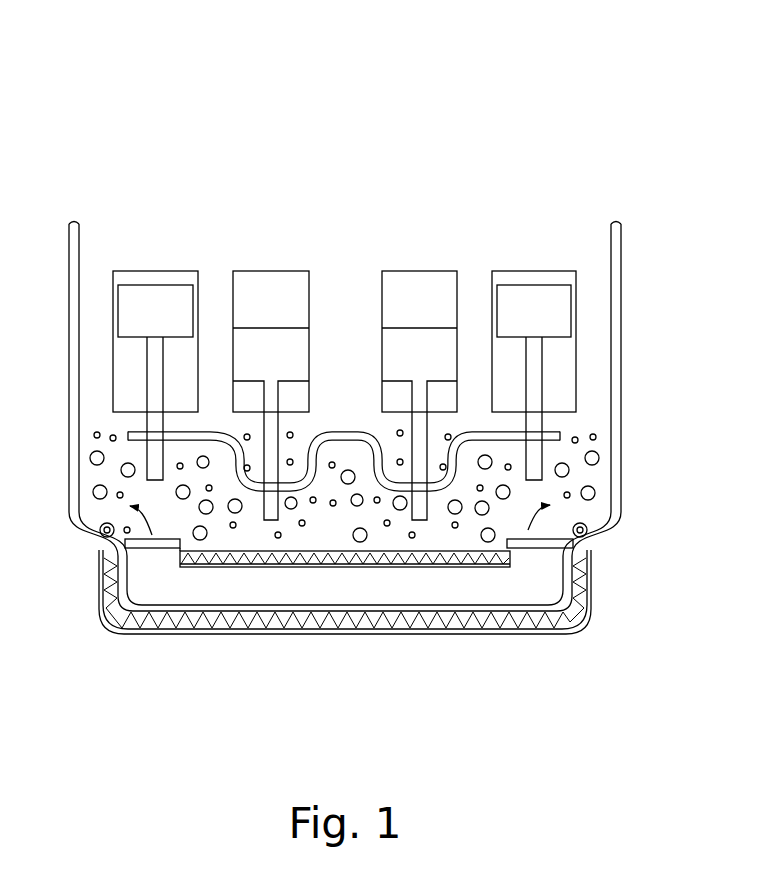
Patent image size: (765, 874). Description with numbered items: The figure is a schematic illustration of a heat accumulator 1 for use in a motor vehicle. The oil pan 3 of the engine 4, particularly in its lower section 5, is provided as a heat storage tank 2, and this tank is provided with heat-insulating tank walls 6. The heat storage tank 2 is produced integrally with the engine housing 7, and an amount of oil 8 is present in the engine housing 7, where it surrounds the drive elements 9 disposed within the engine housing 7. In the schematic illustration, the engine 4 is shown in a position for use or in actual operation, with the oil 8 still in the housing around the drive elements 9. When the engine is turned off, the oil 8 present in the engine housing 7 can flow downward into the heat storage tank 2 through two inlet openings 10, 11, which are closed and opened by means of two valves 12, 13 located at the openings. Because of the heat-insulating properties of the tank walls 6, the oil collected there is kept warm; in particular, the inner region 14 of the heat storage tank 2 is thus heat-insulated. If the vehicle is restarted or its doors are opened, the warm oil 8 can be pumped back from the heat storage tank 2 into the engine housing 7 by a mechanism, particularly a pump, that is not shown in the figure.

The heat accumulator 1 is at (600, 102).
The heat storage tank 2 is at (118, 642).
The oil pan 3 is at (648, 453).
The engine 4 is at (222, 253).
The lower section 5 is at (585, 650).
The heat-insulating tank walls 6 is at (428, 630).
The engine housing 7 is at (620, 242).
The oil 8 is at (594, 432).
The drive elements 9 is at (373, 315).
The inlet opening 10 is at (163, 567).
The inlet opening 11 is at (530, 565).
The valve 12 is at (150, 545).
The valve 13 is at (543, 543).
The inner region 14 is at (270, 595).